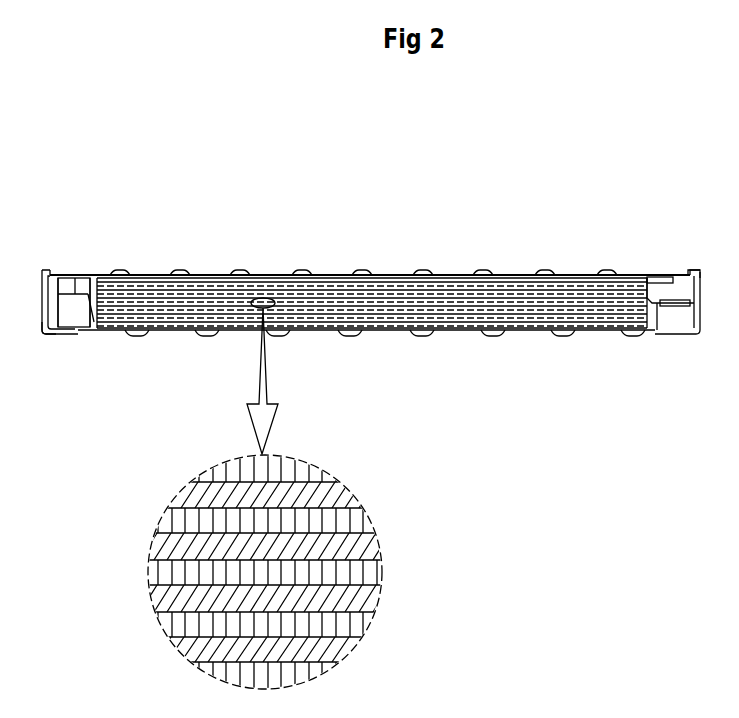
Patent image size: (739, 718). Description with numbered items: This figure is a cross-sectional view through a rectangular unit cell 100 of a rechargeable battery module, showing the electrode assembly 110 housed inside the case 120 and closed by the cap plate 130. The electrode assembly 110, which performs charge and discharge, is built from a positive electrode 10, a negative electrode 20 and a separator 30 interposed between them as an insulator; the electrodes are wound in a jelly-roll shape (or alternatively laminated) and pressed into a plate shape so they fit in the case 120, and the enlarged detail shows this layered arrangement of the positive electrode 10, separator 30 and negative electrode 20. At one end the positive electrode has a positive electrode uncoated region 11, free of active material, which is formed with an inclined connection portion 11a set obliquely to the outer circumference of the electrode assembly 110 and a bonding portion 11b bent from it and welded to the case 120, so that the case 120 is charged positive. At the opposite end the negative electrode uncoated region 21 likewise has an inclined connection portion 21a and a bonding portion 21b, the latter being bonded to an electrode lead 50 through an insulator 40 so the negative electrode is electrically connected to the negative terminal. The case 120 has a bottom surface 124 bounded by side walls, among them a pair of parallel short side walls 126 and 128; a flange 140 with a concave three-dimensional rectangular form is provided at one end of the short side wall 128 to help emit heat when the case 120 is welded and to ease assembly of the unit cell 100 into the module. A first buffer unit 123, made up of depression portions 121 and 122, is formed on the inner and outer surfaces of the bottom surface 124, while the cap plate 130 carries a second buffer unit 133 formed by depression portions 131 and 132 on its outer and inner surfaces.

The unit cell 100 is at (400, 113).
The electrode assembly 110 is at (217, 572).
The positive electrode 10 is at (150, 544).
The negative electrode 20 is at (245, 623).
The separator 30 is at (150, 573).
The positive electrode uncoated region 11 is at (575, 210).
The inclined connection portion 11a is at (625, 276).
The bonding portion 11b is at (670, 274).
The case 120 is at (389, 345).
The depression portion 121 is at (533, 338).
The depression portion 122 is at (493, 338).
The first buffer unit 123 is at (575, 401).
The bottom surface 124 is at (53, 338).
The short side wall 126 is at (33, 272).
The short side wall 128 is at (702, 270).
The cap plate 130 is at (270, 270).
The depression portion 131 is at (520, 270).
The depression portion 132 is at (483, 270).
The second buffer unit 133 is at (455, 210).
The flange 140 is at (668, 322).
The negative electrode uncoated region 21 is at (83, 414).
The inclined connection portion 21a is at (123, 338).
The bonding portion 21b is at (80, 334).
The insulator 40 is at (50, 271).
The electrode lead 50 is at (82, 278).